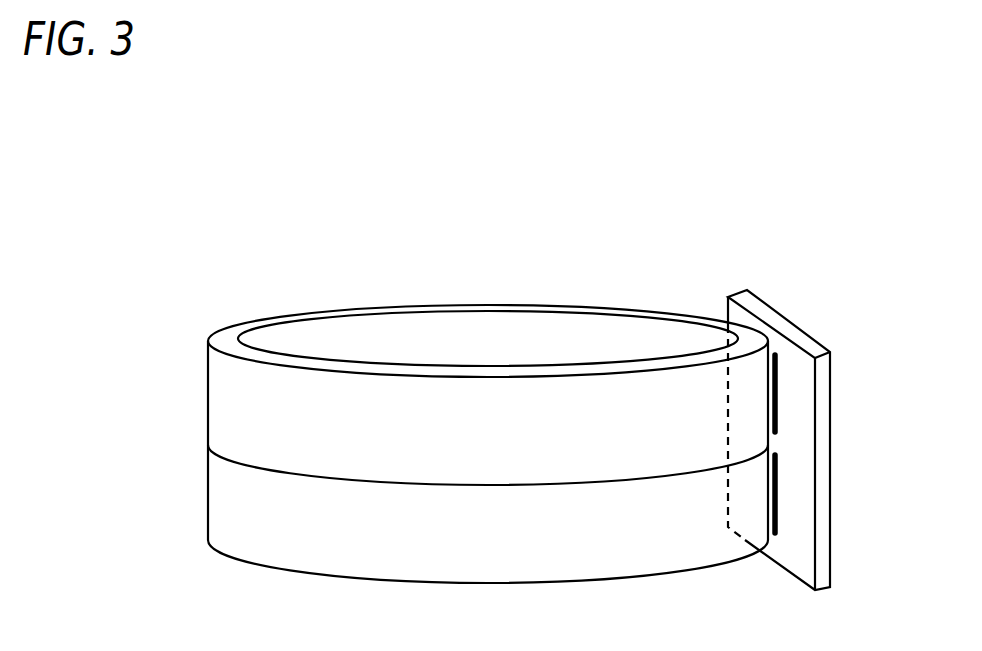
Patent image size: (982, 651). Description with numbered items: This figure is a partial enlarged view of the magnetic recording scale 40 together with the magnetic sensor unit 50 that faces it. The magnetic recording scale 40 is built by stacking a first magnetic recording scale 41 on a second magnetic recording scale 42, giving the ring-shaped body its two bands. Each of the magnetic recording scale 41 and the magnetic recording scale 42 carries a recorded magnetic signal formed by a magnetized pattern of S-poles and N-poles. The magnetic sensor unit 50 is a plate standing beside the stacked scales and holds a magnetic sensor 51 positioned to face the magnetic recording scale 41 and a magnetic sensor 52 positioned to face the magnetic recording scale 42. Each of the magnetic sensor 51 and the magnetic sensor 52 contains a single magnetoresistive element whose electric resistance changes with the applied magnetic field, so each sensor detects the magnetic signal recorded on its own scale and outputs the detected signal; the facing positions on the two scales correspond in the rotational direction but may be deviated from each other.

The magnetic recording scale 40 is at (418, 397).
The magnetic recording scale 41 is at (200, 404).
The magnetic recording scale 42 is at (195, 490).
The magnetic sensor unit 50 is at (799, 406).
The magnetic sensor 51 is at (778, 407).
The magnetic sensor 52 is at (777, 508).